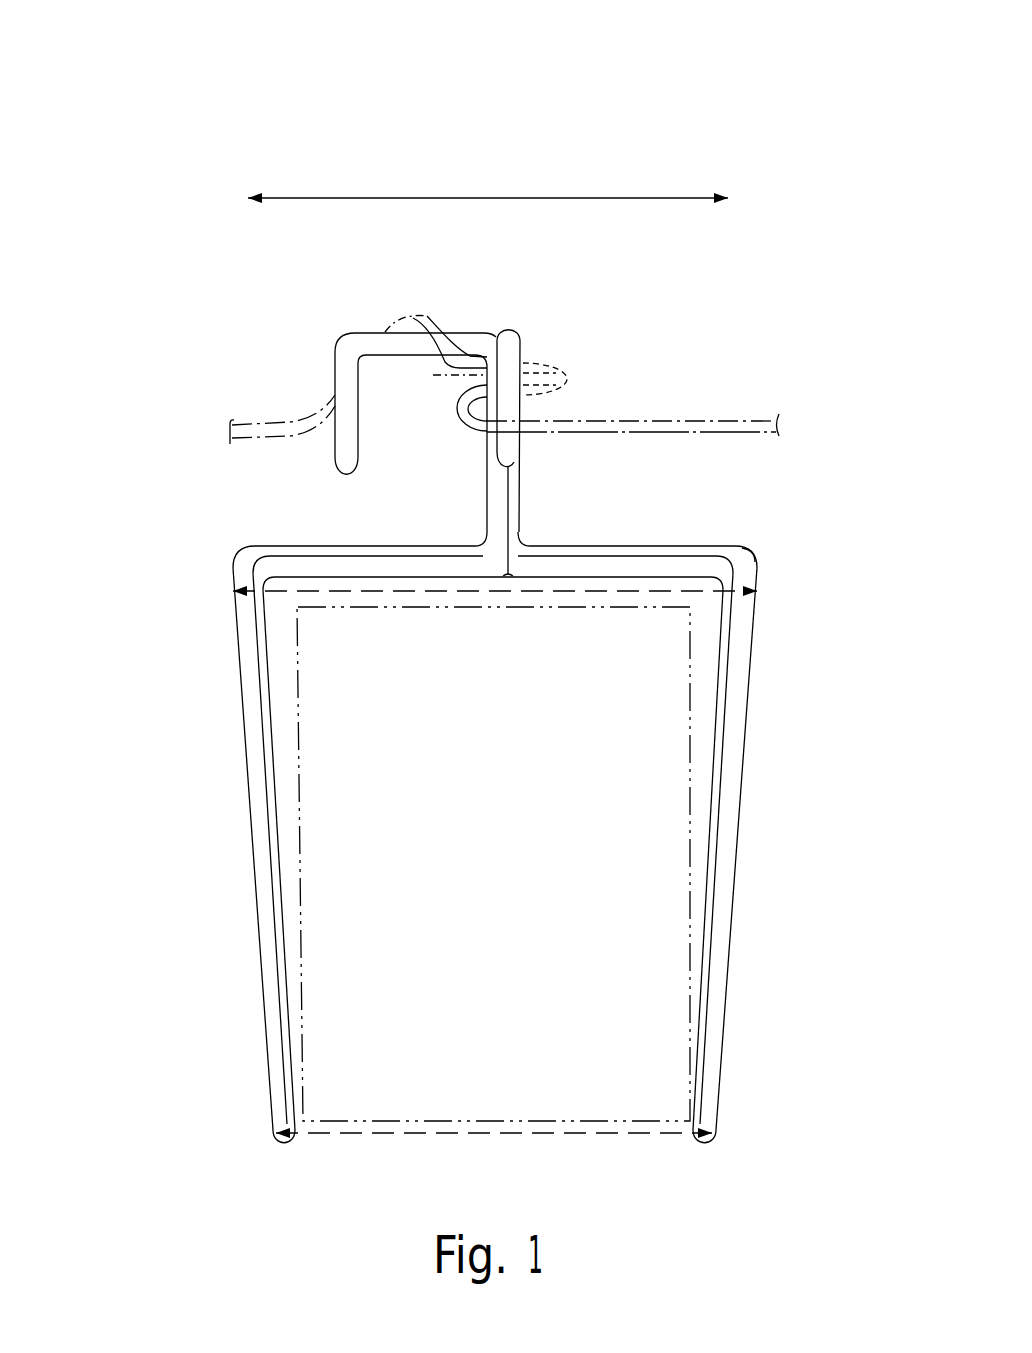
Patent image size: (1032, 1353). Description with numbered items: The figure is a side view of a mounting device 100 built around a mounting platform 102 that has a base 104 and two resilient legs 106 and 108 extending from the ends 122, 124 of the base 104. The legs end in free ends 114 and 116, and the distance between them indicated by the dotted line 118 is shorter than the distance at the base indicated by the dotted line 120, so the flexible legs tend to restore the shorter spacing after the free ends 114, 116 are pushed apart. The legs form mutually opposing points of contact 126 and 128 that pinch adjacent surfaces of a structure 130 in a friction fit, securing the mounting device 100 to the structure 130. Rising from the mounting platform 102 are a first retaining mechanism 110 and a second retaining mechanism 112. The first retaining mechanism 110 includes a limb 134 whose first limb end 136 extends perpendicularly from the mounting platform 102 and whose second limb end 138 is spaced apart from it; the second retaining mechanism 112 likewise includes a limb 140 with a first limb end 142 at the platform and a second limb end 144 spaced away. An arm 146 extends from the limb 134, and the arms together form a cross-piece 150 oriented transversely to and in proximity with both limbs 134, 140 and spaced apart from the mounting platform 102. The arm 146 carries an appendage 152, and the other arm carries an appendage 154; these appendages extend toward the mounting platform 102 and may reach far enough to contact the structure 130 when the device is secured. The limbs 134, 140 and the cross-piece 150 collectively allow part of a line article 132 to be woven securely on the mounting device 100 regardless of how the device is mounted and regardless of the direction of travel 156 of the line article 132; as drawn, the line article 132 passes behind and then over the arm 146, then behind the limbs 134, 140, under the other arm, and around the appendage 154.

The mounting device 100 is at (637, 108).
The mounting platform 102 is at (688, 530).
The base 104 is at (328, 558).
The resilient leg 106 is at (256, 822).
The resilient leg 108 is at (735, 822).
The first retaining mechanism 110 is at (343, 330).
The second retaining mechanism 112 is at (510, 322).
The free end 114 is at (283, 1147).
The free end 116 is at (703, 1140).
The dotted line 118 is at (593, 1135).
The dotted line 120 is at (590, 592).
The end 122 is at (233, 568).
The end 124 is at (748, 560).
The point of contact 126 is at (305, 1112).
The point of contact 128 is at (687, 1108).
The structure 130 is at (511, 774).
The line article 132 is at (745, 418).
The limb 134 is at (485, 492).
The first limb end 136 is at (487, 550).
The second limb end 138 is at (478, 340).
The limb 140 is at (520, 482).
The first limb end 142 is at (523, 548).
The second limb end 144 is at (518, 336).
The arm 146 is at (405, 355).
The cross-piece 150 is at (497, 303).
The appendage 152 is at (335, 452).
The appendage 154 is at (512, 413).
The direction of travel 156 is at (440, 198).